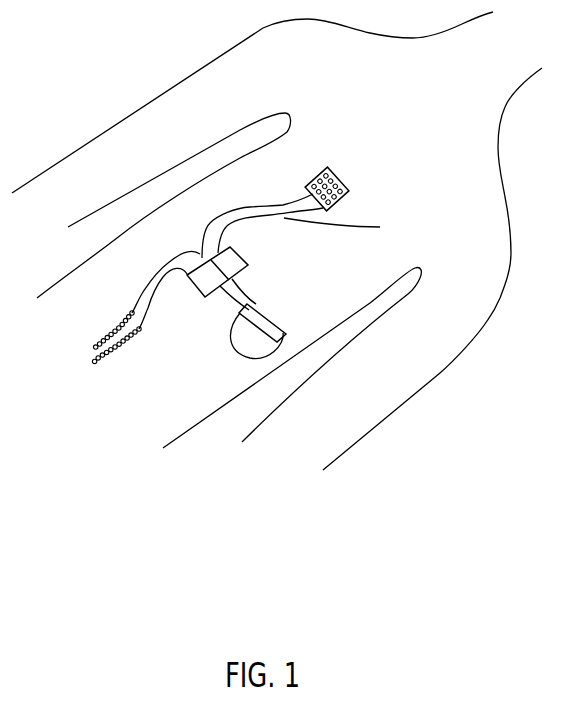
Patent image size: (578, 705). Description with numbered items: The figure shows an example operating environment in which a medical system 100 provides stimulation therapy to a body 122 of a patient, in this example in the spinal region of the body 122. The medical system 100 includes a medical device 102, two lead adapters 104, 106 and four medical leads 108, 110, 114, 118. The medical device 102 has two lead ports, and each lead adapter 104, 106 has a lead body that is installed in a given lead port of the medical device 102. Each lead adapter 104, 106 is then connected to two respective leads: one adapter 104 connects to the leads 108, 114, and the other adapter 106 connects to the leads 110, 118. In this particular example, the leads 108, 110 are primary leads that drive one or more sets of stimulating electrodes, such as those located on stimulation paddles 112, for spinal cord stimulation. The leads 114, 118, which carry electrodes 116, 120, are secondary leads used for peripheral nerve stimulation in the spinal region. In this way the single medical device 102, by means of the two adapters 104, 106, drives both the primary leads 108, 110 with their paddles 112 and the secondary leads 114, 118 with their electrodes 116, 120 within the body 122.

The medical system 100 is at (166, 391).
The medical device 102 is at (289, 325).
The lead adapter 104 is at (253, 270).
The lead adapter 106 is at (193, 305).
The medical lead 108 is at (258, 206).
The medical lead 110 is at (348, 231).
The stimulation paddle 112 is at (348, 185).
The medical lead 114 is at (149, 305).
The electrodes 116 is at (92, 363).
The medical lead 118 is at (142, 292).
The electrodes 120 is at (92, 348).
The body 122 is at (334, 160).